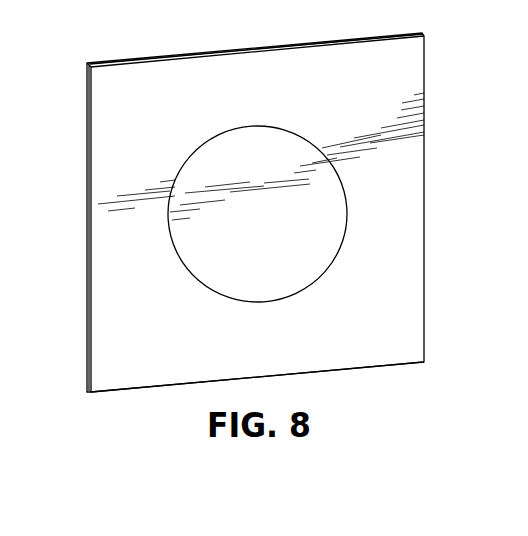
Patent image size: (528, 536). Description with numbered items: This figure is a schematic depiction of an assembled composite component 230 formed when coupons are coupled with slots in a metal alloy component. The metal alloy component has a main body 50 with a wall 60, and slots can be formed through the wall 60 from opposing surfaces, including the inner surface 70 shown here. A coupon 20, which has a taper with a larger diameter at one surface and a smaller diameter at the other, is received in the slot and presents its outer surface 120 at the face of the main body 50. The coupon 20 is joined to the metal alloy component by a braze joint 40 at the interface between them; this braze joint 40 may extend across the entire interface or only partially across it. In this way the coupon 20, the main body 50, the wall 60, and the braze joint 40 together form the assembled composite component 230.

The composite component 230 is at (74, 153).
The main body 50 is at (181, 87).
The wall 60 is at (361, 369).
The inner surface 70 is at (389, 297).
The coupon 20 is at (204, 172).
The outer surface 120 is at (273, 223).
The braze joint 40 is at (318, 131).